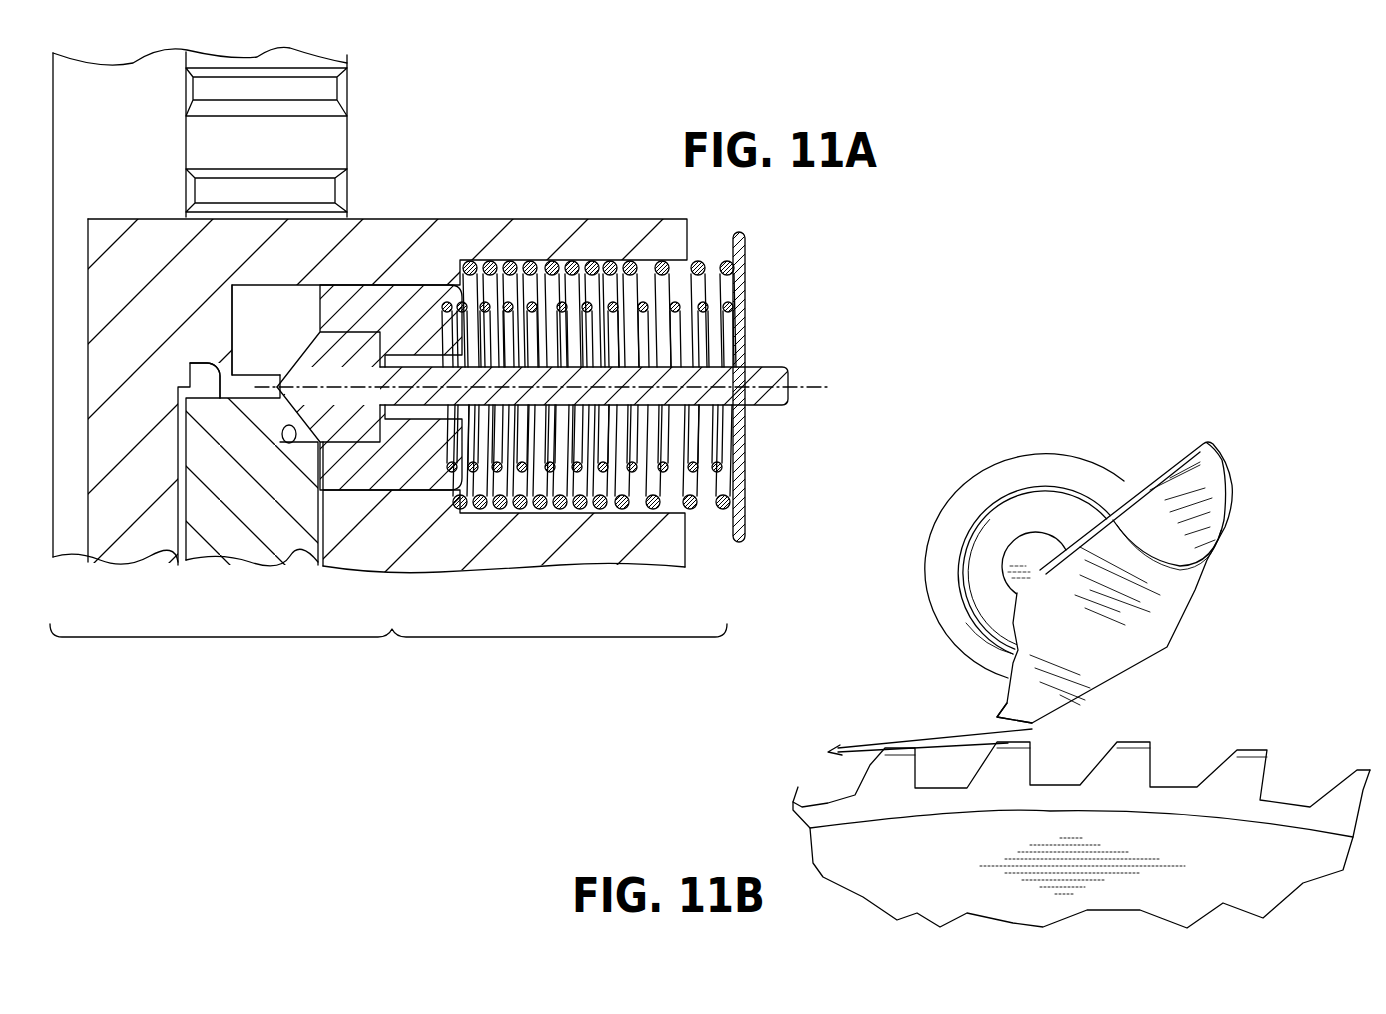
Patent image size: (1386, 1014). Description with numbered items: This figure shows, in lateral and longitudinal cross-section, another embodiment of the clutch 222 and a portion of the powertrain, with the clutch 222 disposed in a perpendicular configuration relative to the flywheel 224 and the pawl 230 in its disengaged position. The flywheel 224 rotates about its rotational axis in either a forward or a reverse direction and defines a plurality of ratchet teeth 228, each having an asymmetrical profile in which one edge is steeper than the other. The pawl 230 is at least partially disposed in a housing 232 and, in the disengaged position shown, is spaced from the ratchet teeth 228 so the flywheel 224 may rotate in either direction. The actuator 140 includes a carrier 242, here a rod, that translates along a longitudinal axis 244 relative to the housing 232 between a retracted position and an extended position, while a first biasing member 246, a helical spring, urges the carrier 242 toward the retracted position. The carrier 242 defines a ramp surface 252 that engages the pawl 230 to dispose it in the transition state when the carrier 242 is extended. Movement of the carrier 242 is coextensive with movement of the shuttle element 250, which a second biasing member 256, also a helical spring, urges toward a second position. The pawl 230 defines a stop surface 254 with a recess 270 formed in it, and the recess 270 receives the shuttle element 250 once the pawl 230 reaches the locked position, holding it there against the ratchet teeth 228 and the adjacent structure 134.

In FIG. 11B, the gear housing 134 is at (1000, 705).
In FIG. 11A, the pin assembly 140 is at (388, 651).
In FIG. 11A, the clutch 222 is at (532, 195).
In FIG. 11B, the clutch 222 is at (946, 463).
In FIG. 11B, the flywheel 224 is at (830, 815).
In FIG. 11A, the ratchet teeth 228 is at (298, 87).
In FIG. 11B, the ratchet teeth 228 is at (1250, 757).
In FIG. 11A, the pawl 230 is at (243, 495).
In FIG. 11B, the pawl 230 is at (1003, 672).
In FIG. 11A, the housing 232 is at (587, 547).
In FIG. 11A, the carrier 242 is at (685, 383).
In FIG. 11B, the carrier 242 is at (1020, 573).
In FIG. 11A, the longitudinal axis 244 is at (814, 378).
In FIG. 11A, the first biasing member 246 is at (693, 475).
In FIG. 11A, the shuttle element 250 is at (398, 290).
In FIG. 11B, the shuttle element 250 is at (1042, 487).
In FIG. 11A, the ramp surface 252 is at (307, 347).
In FIG. 11B, the ramp surface 252 is at (1002, 537).
In FIG. 11A, the stop surface 254 is at (232, 285).
In FIG. 11A, the second biasing member 256 is at (745, 445).
In FIG. 11A, the recess 270 is at (283, 430).